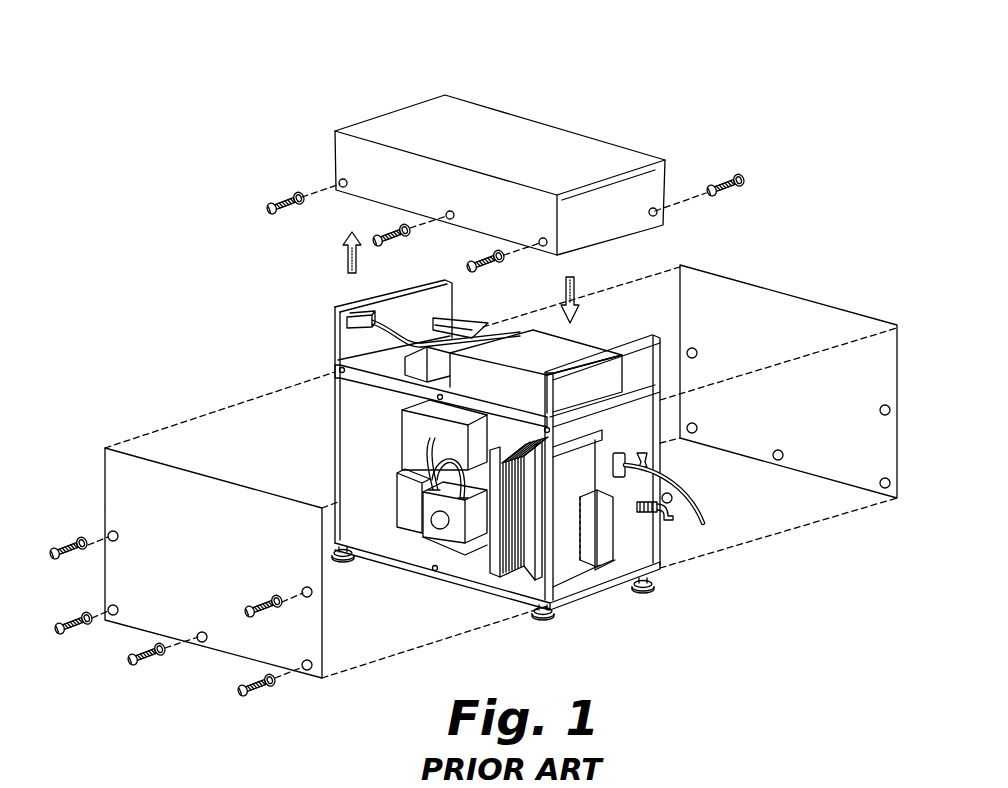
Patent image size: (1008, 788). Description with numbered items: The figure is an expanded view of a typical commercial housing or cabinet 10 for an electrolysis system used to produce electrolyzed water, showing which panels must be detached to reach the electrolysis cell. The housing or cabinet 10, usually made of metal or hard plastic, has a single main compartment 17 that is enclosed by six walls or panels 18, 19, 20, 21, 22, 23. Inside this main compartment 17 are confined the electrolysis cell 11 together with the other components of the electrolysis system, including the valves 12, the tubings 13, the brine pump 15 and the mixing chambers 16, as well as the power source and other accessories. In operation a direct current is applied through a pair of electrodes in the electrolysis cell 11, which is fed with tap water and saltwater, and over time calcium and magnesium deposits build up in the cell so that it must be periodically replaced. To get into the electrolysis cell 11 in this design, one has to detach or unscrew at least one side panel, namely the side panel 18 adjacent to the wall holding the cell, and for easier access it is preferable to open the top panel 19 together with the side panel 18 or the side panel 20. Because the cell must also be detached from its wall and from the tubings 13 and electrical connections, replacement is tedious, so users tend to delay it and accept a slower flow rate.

The housing or cabinet 10 is at (713, 242).
The electrolysis cell 11 is at (518, 565).
The valves 12 is at (430, 482).
The tubings 13 is at (410, 500).
The brine pump 15 is at (456, 530).
The mixing chambers 16 is at (607, 525).
The main compartment 17 is at (360, 432).
The side panel 18 is at (167, 507).
The top panel 19 is at (508, 155).
The side panel 20 is at (775, 318).
The panel 21 is at (352, 340).
The panel 22 is at (633, 557).
The panel 23 is at (547, 618).